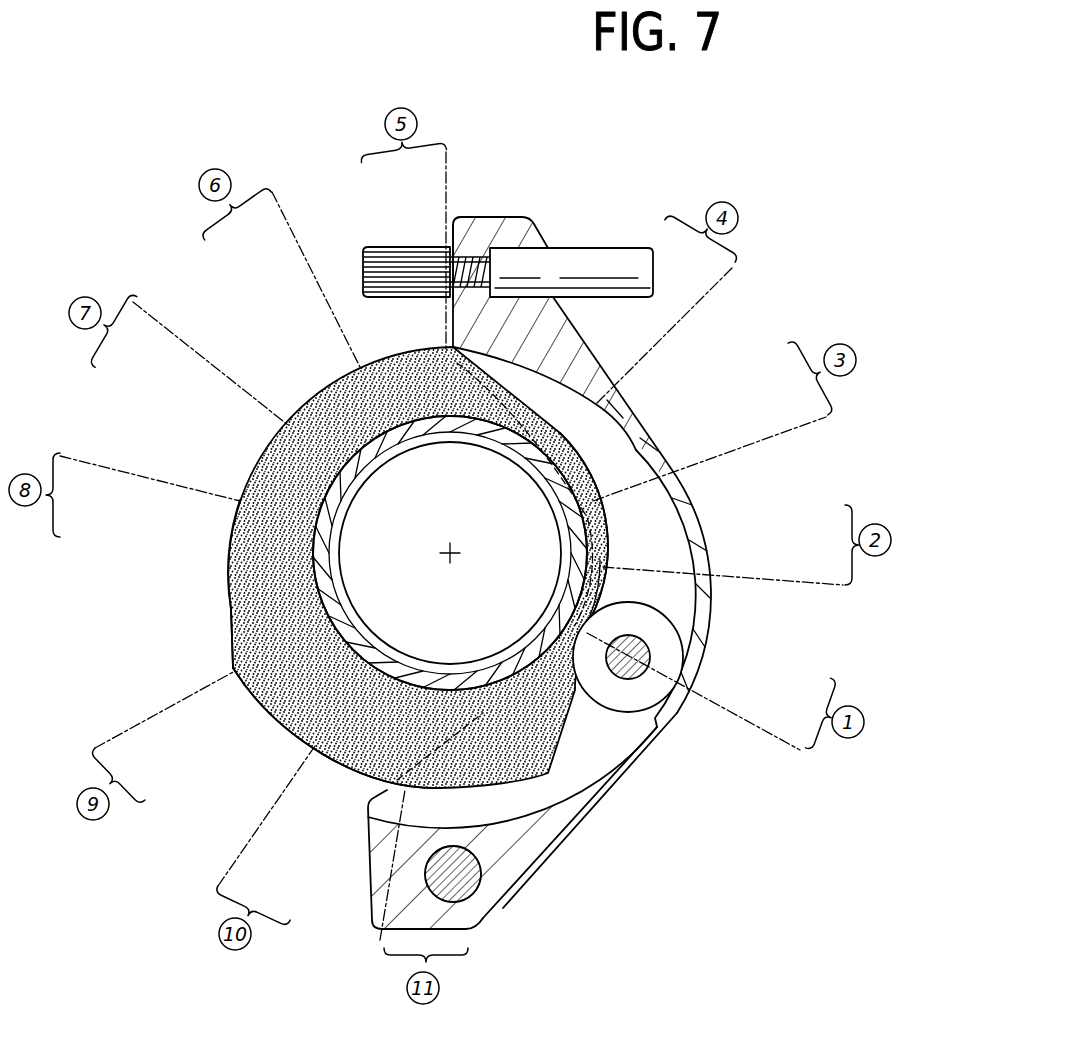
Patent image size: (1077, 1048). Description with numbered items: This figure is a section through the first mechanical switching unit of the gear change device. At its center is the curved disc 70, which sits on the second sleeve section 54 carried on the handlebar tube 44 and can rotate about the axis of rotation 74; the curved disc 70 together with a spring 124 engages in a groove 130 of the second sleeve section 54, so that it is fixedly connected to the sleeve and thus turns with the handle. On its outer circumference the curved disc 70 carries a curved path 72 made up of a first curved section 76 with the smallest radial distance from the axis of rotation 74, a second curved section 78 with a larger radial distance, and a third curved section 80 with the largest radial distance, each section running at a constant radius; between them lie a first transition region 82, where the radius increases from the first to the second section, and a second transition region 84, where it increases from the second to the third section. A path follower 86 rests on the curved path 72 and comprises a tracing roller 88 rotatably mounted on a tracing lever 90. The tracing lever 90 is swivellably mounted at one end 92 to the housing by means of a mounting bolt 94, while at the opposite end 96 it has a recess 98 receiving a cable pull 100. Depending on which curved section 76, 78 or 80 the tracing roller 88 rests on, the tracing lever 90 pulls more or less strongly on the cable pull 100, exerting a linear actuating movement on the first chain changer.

The handlebar tube 44 is at (388, 655).
The second sleeve section 54 is at (436, 553).
The curved disc 70 is at (457, 593).
The curved path 72 is at (583, 474).
The axis of rotation 74 is at (455, 551).
The first curved section 76 is at (605, 548).
The second curved section 78 is at (317, 397).
The third curved section 80 is at (340, 792).
The first transition region 82 is at (575, 317).
The second transition region 84 is at (232, 622).
The path follower 86 is at (630, 684).
The tracing roller 88 is at (655, 700).
The tracing lever 90 is at (558, 836).
The end 92 is at (496, 857).
The mounting bolt 94 is at (465, 880).
The end 96 is at (467, 224).
The recess 98 is at (480, 290).
The cable pull 100 is at (508, 232).
The spring 124 is at (345, 470).
The groove 130 is at (343, 487).